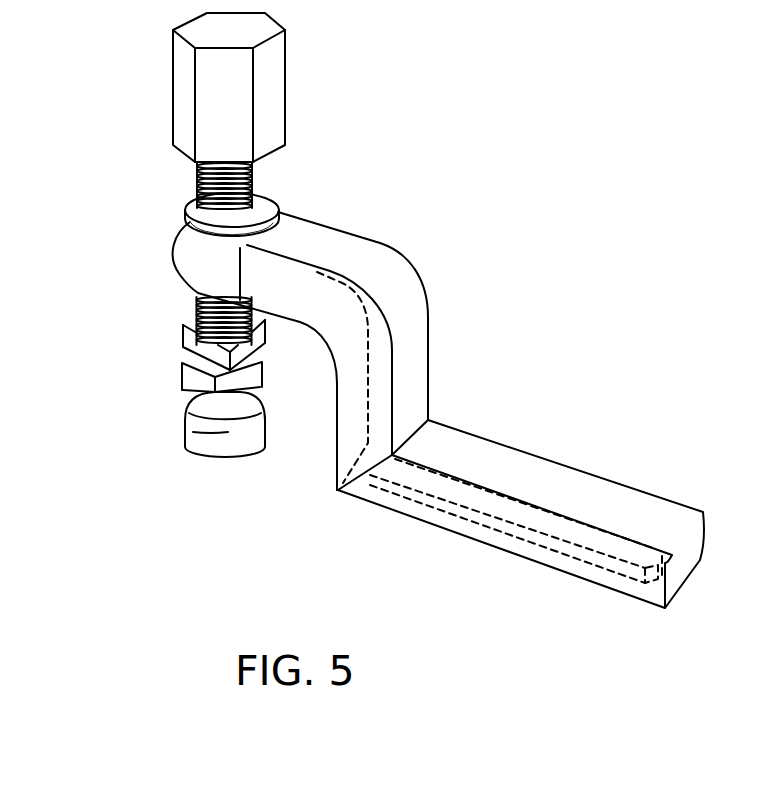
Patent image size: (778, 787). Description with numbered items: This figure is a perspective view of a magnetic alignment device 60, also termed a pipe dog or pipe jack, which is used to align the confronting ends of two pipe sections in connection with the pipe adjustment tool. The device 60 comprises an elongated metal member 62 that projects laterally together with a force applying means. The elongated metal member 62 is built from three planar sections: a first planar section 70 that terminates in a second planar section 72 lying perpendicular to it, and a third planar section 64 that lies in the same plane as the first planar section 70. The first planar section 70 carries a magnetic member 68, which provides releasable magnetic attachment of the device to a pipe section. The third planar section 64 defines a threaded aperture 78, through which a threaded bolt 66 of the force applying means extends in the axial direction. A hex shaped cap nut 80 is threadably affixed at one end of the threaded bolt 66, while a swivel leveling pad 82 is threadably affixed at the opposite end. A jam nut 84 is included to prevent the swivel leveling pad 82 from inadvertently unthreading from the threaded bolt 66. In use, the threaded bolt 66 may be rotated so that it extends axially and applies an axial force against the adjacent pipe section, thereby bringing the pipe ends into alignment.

The magnetic alignment device 60 is at (540, 192).
The elongated metal member 62 is at (438, 391).
The third planar section 64 is at (328, 237).
The threaded bolt 66 is at (195, 305).
The magnetic member 68 is at (544, 533).
The first planar section 70 is at (563, 478).
The second planar section 72 is at (422, 345).
The threaded aperture 78 is at (203, 207).
The hex shaped cap nut 80 is at (278, 62).
The swivel leveling pad 82 is at (192, 432).
The jam nut 84 is at (183, 338).